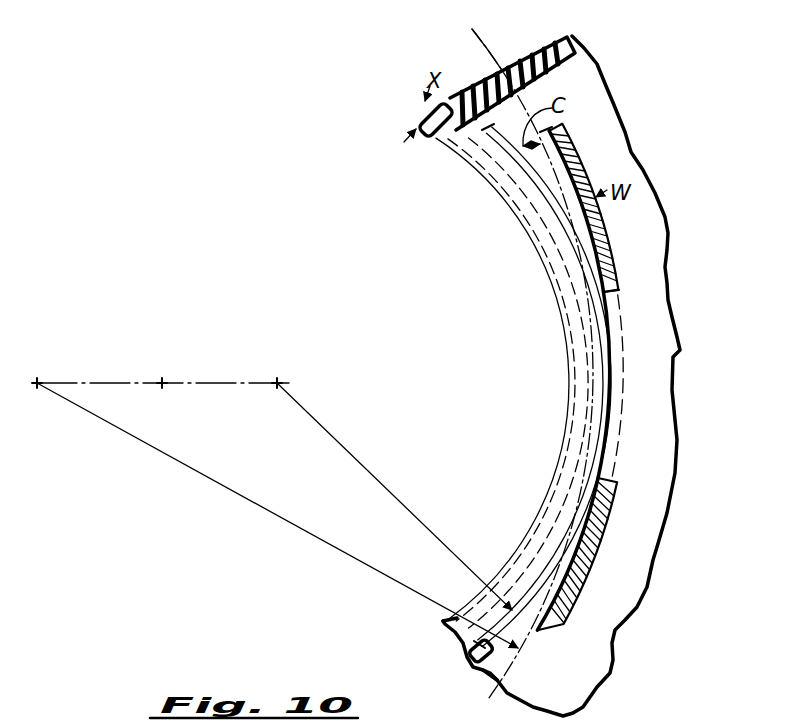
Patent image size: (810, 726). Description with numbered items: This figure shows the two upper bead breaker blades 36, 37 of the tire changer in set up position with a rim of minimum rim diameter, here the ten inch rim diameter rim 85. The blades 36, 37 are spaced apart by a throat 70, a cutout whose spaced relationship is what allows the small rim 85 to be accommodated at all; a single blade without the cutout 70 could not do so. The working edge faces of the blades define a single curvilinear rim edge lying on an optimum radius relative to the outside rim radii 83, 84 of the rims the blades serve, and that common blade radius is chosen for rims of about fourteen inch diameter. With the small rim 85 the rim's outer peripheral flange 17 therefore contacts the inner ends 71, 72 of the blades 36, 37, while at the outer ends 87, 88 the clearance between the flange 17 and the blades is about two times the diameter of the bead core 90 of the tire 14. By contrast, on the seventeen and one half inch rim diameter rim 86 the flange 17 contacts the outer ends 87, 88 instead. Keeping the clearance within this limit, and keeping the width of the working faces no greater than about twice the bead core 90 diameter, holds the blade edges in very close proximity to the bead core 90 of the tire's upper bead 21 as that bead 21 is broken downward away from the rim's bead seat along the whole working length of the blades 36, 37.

The pneumatic tire 14 is at (527, 60).
The upper bead 21 is at (448, 130).
The bead core 90 is at (423, 101).
The outer peripheral flange 17 is at (535, 176).
The outer end of bead breaker blade 87 is at (541, 131).
The bead breaker blade 36 is at (580, 177).
The bead breaker blade 37 is at (607, 537).
The inner end of bead breaker blade 71 is at (612, 297).
The inner end of bead breaker blade 72 is at (612, 467).
The throat 70 is at (623, 373).
The outside rim radius 83 is at (400, 493).
The outside rim radius 84 is at (300, 528).
The minimum diameter rim 85 is at (470, 668).
The maximum diameter rim 86 is at (493, 692).
The outer end of bead breaker blade 88 is at (530, 637).